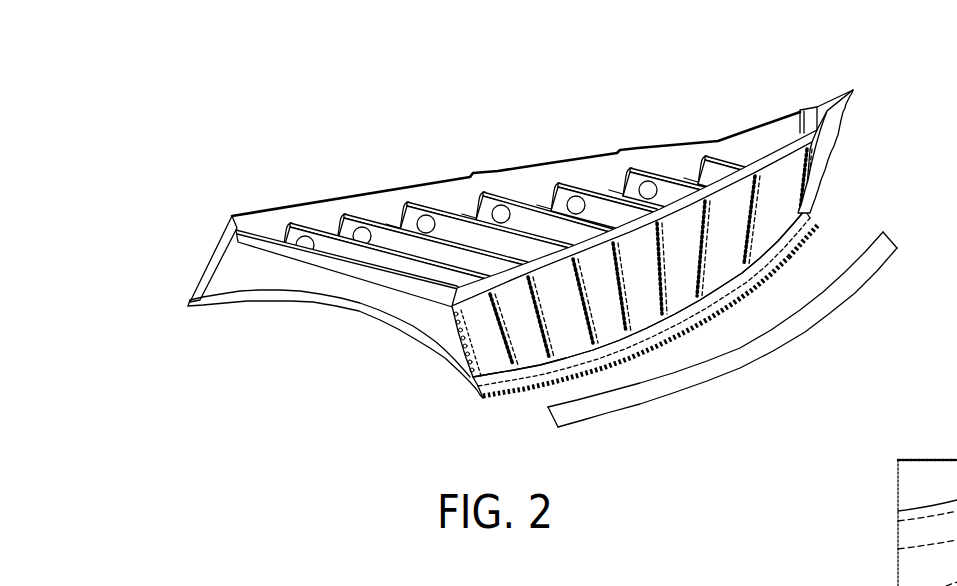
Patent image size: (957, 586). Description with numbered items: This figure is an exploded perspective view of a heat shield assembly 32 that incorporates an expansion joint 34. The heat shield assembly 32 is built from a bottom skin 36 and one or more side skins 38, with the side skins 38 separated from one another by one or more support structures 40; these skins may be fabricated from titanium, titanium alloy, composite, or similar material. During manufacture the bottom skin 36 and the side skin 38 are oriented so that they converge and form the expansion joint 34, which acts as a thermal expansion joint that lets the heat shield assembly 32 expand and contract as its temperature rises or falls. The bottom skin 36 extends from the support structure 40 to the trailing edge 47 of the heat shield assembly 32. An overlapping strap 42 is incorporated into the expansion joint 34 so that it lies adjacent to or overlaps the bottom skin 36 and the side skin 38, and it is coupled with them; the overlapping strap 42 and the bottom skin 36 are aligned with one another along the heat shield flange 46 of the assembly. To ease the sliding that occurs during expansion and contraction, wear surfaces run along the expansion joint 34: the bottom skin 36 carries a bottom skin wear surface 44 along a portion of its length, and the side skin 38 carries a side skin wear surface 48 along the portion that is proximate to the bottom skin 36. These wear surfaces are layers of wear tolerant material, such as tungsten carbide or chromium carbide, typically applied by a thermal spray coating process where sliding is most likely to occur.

The heat shield assembly 32 is at (545, 253).
The expansion joint 34 is at (484, 383).
The bottom skin 36 is at (360, 306).
The side skin 38 is at (657, 298).
The support structure 40 is at (247, 258).
The overlapping strap 42 is at (697, 384).
The bottom skin wear surface 44 is at (718, 312).
The heat shield flange 46 is at (813, 217).
The trailing edge 47 is at (828, 140).
The side skin wear surface 48 is at (530, 387).